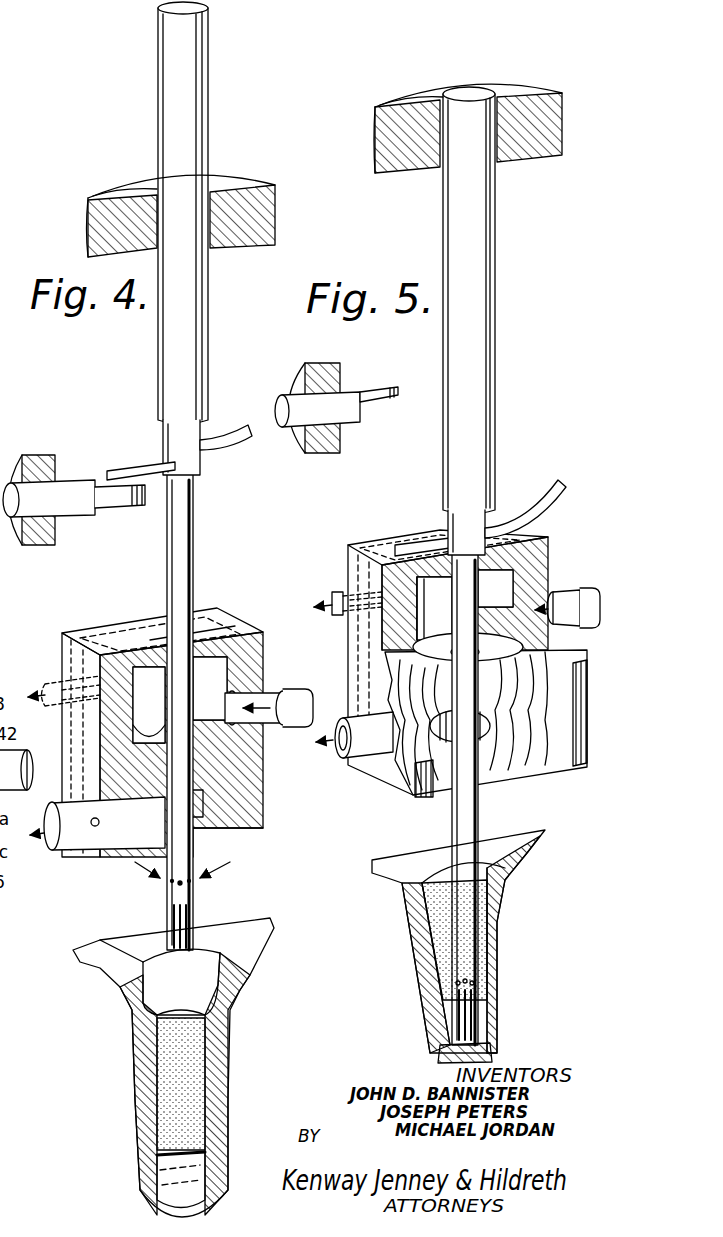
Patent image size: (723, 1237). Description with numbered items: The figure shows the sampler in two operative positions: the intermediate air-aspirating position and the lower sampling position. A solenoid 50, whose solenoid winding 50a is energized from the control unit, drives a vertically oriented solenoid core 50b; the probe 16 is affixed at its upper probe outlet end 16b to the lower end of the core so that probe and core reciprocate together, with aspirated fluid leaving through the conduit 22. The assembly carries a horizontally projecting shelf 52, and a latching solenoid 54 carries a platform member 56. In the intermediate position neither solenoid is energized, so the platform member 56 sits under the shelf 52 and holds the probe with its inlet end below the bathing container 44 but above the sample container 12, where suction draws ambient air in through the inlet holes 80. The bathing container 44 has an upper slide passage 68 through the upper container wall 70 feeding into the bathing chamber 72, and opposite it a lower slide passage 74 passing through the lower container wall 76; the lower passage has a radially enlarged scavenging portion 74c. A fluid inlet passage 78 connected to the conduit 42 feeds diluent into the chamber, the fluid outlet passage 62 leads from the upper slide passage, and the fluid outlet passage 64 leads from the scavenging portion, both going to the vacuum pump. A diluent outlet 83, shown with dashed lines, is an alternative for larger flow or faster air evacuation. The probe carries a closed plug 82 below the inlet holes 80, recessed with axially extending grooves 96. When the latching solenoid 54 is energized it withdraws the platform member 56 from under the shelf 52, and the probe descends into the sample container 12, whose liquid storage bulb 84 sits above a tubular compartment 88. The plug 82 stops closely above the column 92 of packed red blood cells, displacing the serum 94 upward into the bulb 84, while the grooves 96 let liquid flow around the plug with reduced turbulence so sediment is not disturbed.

In FIG. 4, the sample container 12 is at (166, 1067).
In FIG. 5, the sample container 12 is at (464, 930).
In FIG. 4, the probe 16 is at (180, 600).
In FIG. 5, the probe 16 is at (465, 603).
In FIG. 4, the probe outlet end 16b is at (160, 884).
In FIG. 5, the conduit 22 is at (525, 510).
In FIG. 4, the conduit 42 is at (290, 676).
In FIG. 5, the conduit 42 is at (582, 588).
In FIG. 4, the bathing container 44 is at (167, 719).
In FIG. 5, the bathing container 44 is at (456, 652).
In FIG. 4, the solenoid 50 is at (181, 238).
In FIG. 5, the solenoid 50 is at (468, 294).
In FIG. 4, the solenoid winding 50a is at (120, 190).
In FIG. 5, the solenoid winding 50a is at (410, 100).
In FIG. 4, the solenoid core 50b is at (196, 66).
In FIG. 5, the solenoid core 50b is at (491, 321).
In FIG. 5, the shelf 52 is at (425, 540).
In FIG. 4, the latching solenoid 54 is at (38, 450).
In FIG. 5, the latching solenoid 54 is at (290, 392).
In FIG. 4, the platform member 56 is at (108, 470).
In FIG. 5, the platform member 56 is at (380, 390).
In FIG. 4, the fluid outlet passage 62 is at (88, 640).
In FIG. 5, the fluid outlet passage 62 is at (366, 545).
In FIG. 4, the fluid outlet passage 64 is at (66, 850).
In FIG. 5, the fluid outlet passage 64 is at (347, 760).
In FIG. 4, the upper slide passage 68 is at (222, 636).
In FIG. 4, the upper container wall 70 is at (218, 640).
In FIG. 4, the bathing chamber 72 is at (150, 708).
In FIG. 5, the bathing chamber 72 is at (432, 606).
In FIG. 4, the lower slide passage 74 is at (200, 768).
In FIG. 4, the scavenging portion 74c is at (205, 802).
In FIG. 5, the scavenging portion 74c is at (492, 724).
In FIG. 4, the lower container wall 76 is at (244, 812).
In FIG. 5, the lower container wall 76 is at (555, 765).
In FIG. 4, the fluid inlet passage 78 is at (236, 695).
In FIG. 5, the fluid inlet passage 78 is at (554, 592).
In FIG. 4, the inlet holes 80 is at (195, 882).
In FIG. 4, the plug 82 is at (225, 985).
In FIG. 5, the plug 82 is at (490, 1018).
In FIG. 4, the diluent outlet 83 is at (48, 683).
In FIG. 5, the diluent outlet 83 is at (333, 590).
In FIG. 5, the liquid storage bulb 84 is at (492, 888).
In FIG. 5, the tubular compartment 88 is at (498, 925).
In FIG. 4, the column of packed red blood cells 92 is at (195, 1172).
In FIG. 5, the column of packed red blood cells 92 is at (440, 1058).
In FIG. 4, the serum 94 is at (194, 1060).
In FIG. 5, the serum 94 is at (484, 964).
In FIG. 4, the grooves 96 is at (176, 930).
In FIG. 5, the grooves 96 is at (460, 1020).